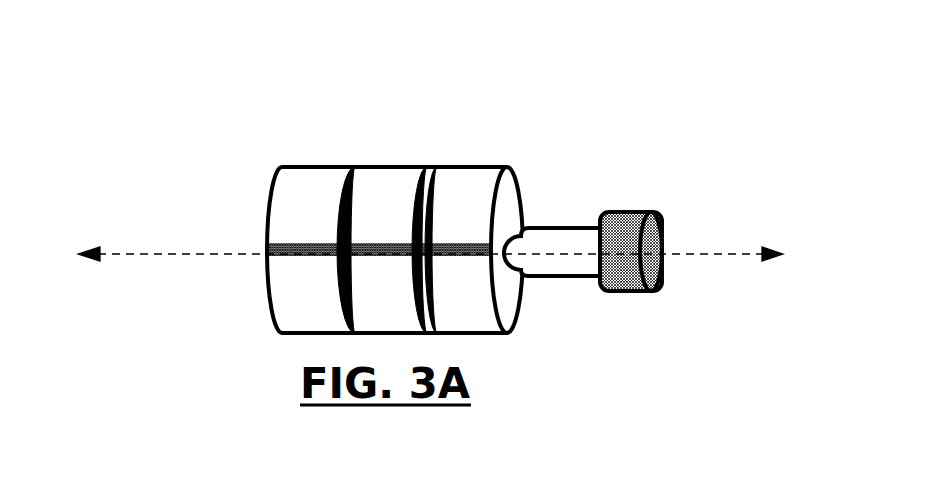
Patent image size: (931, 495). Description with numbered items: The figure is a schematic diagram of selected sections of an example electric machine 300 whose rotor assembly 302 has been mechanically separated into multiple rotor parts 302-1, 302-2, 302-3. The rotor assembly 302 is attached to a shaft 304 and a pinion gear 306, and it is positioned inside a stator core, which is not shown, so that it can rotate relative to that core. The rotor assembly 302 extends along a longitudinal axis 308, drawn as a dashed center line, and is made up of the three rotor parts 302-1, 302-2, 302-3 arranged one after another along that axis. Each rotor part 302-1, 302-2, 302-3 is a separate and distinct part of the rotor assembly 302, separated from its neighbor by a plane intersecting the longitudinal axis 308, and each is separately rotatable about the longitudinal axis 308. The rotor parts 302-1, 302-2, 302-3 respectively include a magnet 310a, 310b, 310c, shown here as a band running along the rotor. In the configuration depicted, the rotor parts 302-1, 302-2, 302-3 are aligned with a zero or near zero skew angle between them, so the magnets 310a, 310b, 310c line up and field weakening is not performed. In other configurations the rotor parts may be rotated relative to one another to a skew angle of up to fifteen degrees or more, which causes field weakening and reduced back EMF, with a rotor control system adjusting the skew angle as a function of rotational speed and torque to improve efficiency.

The electric machine 300 is at (430, 203).
The rotor assembly 302 is at (395, 212).
The rotor part 302-1 is at (298, 250).
The rotor part 302-2 is at (370, 250).
The rotor part 302-3 is at (467, 250).
The shaft 304 is at (562, 223).
The pinion gear 306 is at (627, 208).
The longitudinal axis 308 is at (155, 252).
The magnet 310a is at (284, 241).
The magnet 310b is at (358, 241).
The magnet 310c is at (438, 241).